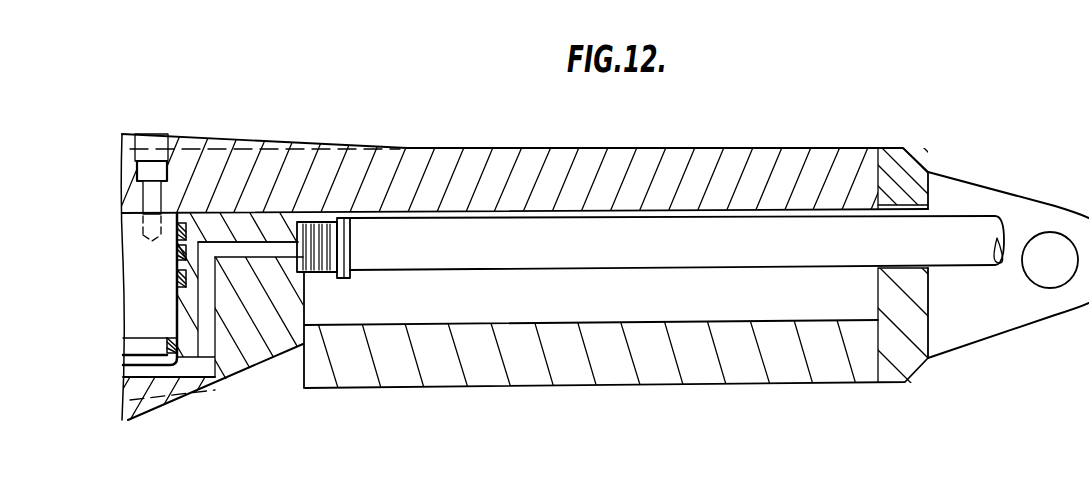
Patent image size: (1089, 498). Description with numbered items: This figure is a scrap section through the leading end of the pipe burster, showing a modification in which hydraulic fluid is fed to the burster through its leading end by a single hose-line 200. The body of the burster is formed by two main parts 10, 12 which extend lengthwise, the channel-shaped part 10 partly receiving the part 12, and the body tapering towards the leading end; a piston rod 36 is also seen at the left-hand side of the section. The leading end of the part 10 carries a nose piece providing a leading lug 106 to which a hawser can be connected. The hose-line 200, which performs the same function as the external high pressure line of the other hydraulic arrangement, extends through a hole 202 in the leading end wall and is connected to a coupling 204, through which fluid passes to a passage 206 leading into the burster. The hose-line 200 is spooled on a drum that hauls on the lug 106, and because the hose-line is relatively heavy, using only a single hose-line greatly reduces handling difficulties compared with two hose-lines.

The part 10 is at (238, 136).
The part 12 is at (253, 355).
The piston rod 36 is at (162, 309).
The leading lug 106 is at (1027, 318).
The hose-line 200 is at (830, 256).
The hole 202 is at (940, 209).
The coupling 204 is at (353, 282).
The passage 206 is at (245, 246).